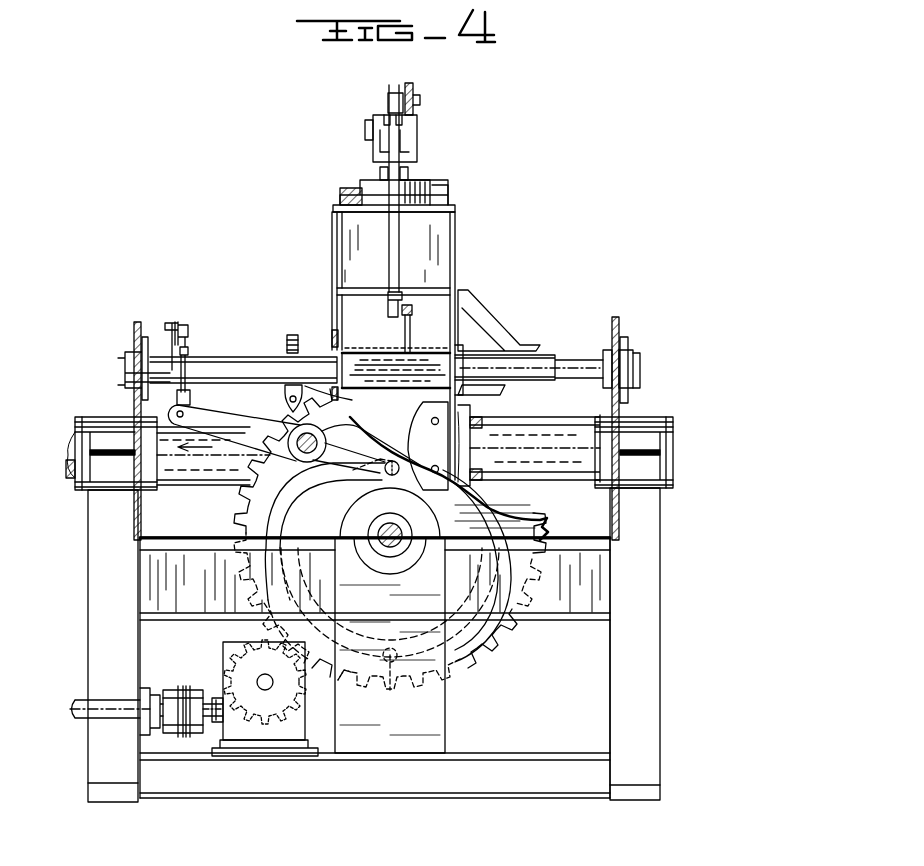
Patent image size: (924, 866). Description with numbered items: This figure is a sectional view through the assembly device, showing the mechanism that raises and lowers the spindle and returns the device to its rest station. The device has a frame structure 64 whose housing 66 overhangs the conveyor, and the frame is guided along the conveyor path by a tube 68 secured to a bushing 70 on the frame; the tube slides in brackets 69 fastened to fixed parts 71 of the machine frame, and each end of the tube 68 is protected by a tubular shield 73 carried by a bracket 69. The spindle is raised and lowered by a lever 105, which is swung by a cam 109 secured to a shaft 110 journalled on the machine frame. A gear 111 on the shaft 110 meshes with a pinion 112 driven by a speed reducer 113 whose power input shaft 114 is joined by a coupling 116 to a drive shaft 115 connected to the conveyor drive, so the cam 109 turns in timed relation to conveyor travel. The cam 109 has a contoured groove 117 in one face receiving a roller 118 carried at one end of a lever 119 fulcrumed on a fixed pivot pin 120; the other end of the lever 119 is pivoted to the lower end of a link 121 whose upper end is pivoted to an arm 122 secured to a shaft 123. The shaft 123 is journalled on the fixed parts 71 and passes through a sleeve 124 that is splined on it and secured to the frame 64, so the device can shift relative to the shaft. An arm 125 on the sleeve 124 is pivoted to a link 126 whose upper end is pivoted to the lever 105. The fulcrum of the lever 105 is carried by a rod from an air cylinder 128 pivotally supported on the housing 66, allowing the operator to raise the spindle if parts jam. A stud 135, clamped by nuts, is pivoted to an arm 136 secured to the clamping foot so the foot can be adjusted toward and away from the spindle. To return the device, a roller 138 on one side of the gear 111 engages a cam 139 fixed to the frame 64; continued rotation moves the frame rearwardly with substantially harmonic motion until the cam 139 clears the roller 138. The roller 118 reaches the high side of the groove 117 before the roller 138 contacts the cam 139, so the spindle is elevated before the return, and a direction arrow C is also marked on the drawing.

The frame structure 64 is at (464, 252).
The housing 66 is at (332, 234).
The tube 68 is at (540, 432).
The brackets 69 is at (90, 422).
The bushing 70 is at (478, 492).
The parts of the fixed frame 71 is at (133, 512).
The tubular shield 73 is at (200, 460).
The lever 105 is at (410, 133).
The cam 109 is at (326, 476).
The shaft 110 is at (391, 520).
The gear 111 is at (500, 655).
The pinion 112 is at (222, 668).
The speed reducer 113 is at (288, 735).
The power input shaft 114 is at (226, 752).
The drive shaft 115 is at (82, 712).
The coupling 116 is at (180, 728).
The contoured groove 117 is at (262, 508).
The roller 118 is at (392, 460).
The lever 119 is at (335, 455).
The fixed pivot pin 120 is at (296, 438).
The link 121 is at (188, 362).
The arm 122 is at (177, 322).
The shaft 123 is at (258, 362).
The sleeve 124 is at (372, 352).
The arm 125 is at (413, 342).
The link 126 is at (392, 232).
The air cylinder 128 is at (412, 178).
The stud 135 is at (297, 335).
The arm 136 is at (297, 402).
The roller 138 is at (391, 684).
The cam 139 is at (440, 455).
The direction C is at (298, 518).